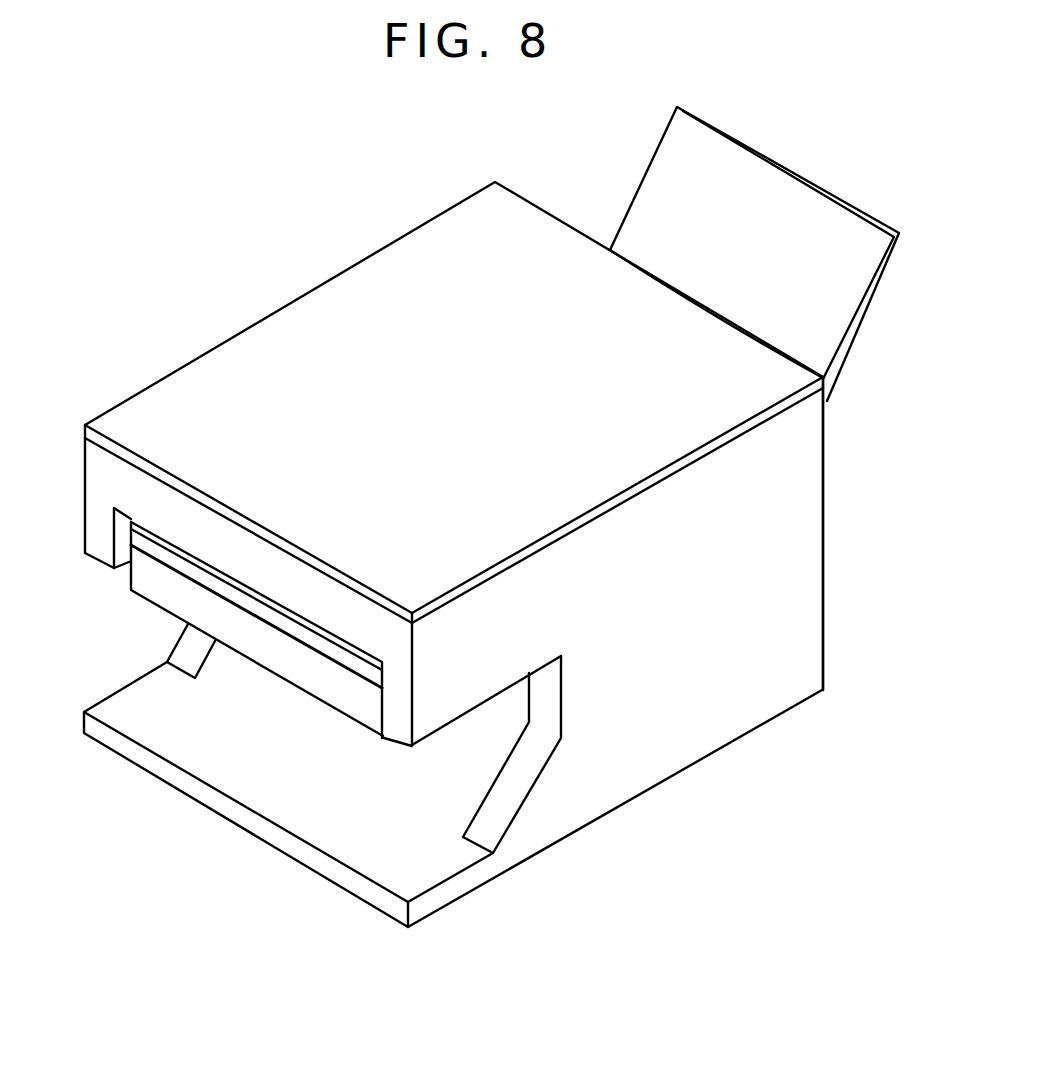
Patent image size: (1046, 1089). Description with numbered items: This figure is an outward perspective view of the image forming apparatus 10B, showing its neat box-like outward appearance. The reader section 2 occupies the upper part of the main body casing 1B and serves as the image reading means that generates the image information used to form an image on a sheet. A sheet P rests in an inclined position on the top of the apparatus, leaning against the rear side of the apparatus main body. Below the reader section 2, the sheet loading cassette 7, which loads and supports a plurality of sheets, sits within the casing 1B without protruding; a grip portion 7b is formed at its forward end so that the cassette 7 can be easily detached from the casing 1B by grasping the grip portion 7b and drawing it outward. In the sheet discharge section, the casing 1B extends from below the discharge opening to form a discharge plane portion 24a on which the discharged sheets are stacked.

The image forming apparatus 10B is at (734, 873).
The casing 1B is at (753, 702).
The reader section 2 is at (103, 473).
The sheet P is at (852, 277).
The sheet loading cassette 7 is at (188, 567).
The grip portion 7b is at (175, 605).
The discharge plane portion 24a is at (220, 772).